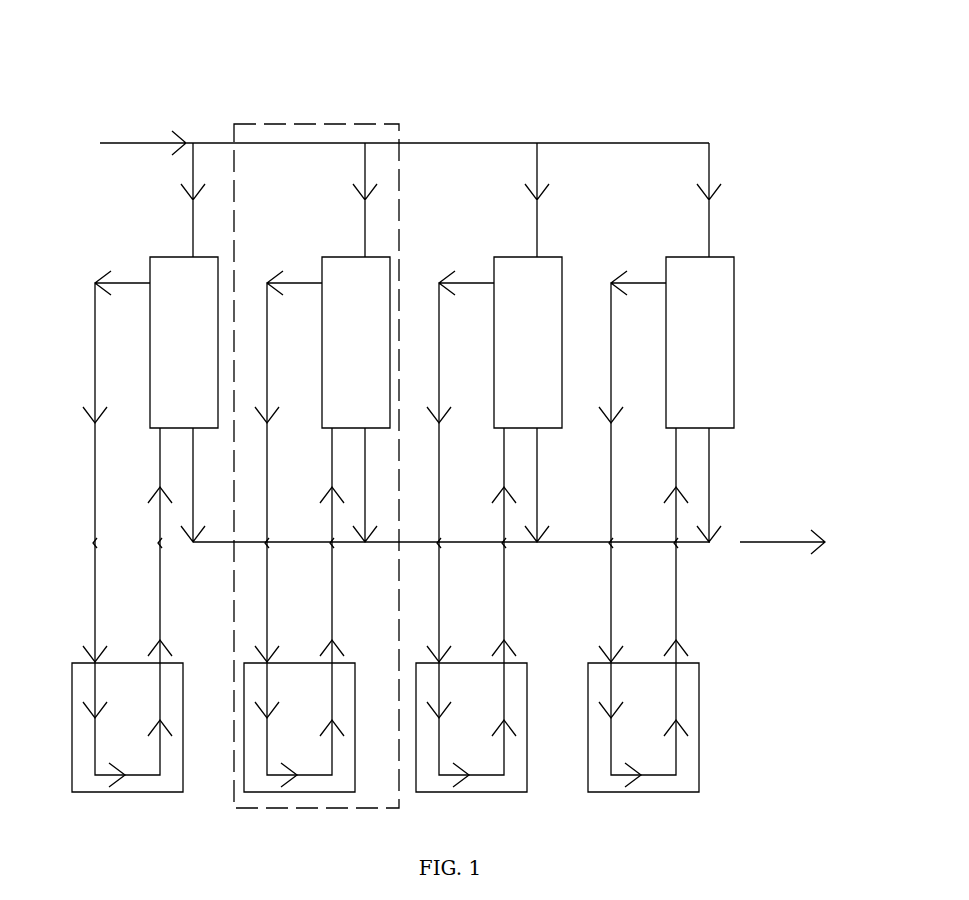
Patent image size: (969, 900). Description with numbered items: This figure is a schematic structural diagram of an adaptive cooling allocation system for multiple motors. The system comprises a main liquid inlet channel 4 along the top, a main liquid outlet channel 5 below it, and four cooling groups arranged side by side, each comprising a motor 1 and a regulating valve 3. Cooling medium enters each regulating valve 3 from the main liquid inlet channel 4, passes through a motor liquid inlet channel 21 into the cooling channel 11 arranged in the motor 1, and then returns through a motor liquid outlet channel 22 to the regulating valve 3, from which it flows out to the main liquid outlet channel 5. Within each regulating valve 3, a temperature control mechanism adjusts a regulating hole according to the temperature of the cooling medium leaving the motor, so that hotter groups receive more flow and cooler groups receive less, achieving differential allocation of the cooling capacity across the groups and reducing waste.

The motor 1 is at (700, 767).
The cooling channel 11 is at (677, 692).
The motor liquid inlet channel 21 is at (632, 282).
The motor liquid outlet channel 22 is at (677, 467).
The regulating valve 3 is at (713, 343).
The main liquid inlet channel 4 is at (487, 143).
The main liquid outlet channel 5 is at (565, 545).